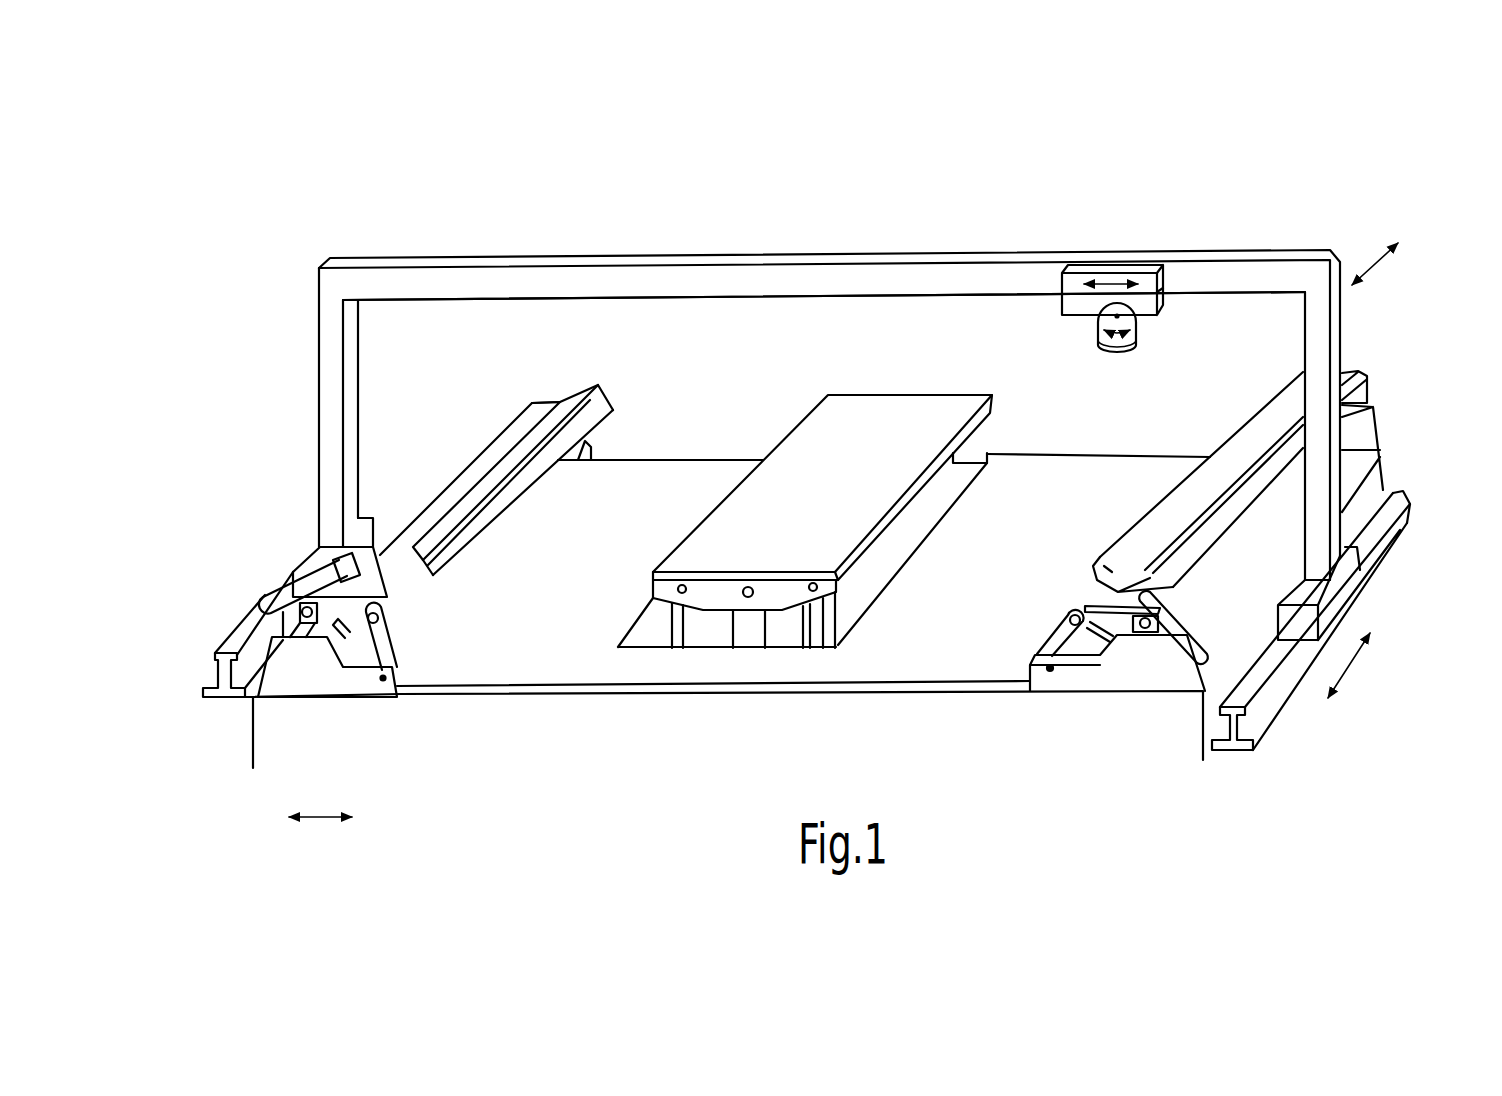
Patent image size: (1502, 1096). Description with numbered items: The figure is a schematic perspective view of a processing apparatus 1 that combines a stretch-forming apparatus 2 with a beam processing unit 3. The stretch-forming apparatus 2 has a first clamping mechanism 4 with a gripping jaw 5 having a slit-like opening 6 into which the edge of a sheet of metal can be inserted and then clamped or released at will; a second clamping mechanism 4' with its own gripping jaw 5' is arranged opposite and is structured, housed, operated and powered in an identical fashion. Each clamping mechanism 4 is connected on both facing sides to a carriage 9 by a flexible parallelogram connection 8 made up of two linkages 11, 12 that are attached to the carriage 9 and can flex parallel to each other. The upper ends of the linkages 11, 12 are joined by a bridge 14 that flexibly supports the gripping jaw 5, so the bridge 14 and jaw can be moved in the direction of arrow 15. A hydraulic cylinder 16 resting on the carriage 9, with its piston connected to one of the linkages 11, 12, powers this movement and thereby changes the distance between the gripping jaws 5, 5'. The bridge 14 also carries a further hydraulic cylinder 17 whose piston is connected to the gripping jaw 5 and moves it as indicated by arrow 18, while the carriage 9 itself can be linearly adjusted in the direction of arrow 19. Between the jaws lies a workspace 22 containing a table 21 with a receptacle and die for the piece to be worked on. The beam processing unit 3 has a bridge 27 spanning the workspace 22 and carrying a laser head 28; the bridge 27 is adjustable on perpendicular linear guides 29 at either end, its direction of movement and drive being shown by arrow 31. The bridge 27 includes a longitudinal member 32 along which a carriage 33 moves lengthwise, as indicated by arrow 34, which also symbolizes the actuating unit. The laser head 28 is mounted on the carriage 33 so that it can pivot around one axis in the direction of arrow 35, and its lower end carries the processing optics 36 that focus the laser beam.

The processing apparatus 1 is at (1184, 168).
The stretch-forming apparatus 2 is at (641, 723).
The beam processing unit 3 is at (1197, 232).
The first clamping mechanism 4 is at (567, 563).
The second clamping mechanism 4' is at (1186, 502).
The gripping jaw 5 is at (497, 480).
The gripping jaw 5' is at (1186, 500).
The slit-like opening 6 is at (621, 386).
The parallelogram connection 8 is at (358, 641).
The carriage 9 is at (591, 456).
The linkage 11 is at (283, 698).
The linkage 12 is at (389, 649).
The bridge 14 is at (384, 573).
The arrow 15 is at (372, 697).
The hydraulic cylinder 16 is at (327, 697).
The hydraulic cylinder 17 is at (270, 597).
The arrow 18 is at (378, 526).
The arrow 19 is at (318, 818).
The table 21 is at (830, 509).
The workspace 22 is at (897, 372).
The bridge 27 is at (584, 262).
The laser head 28 is at (1137, 335).
The linear guide 29 is at (205, 616).
The arrow 31 is at (1352, 663).
The longitudinal member 32 is at (820, 278).
The carriage 33 is at (1166, 293).
The arrow 34 is at (1110, 288).
The arrow 35 is at (1097, 312).
The processing optics 36 is at (1113, 355).